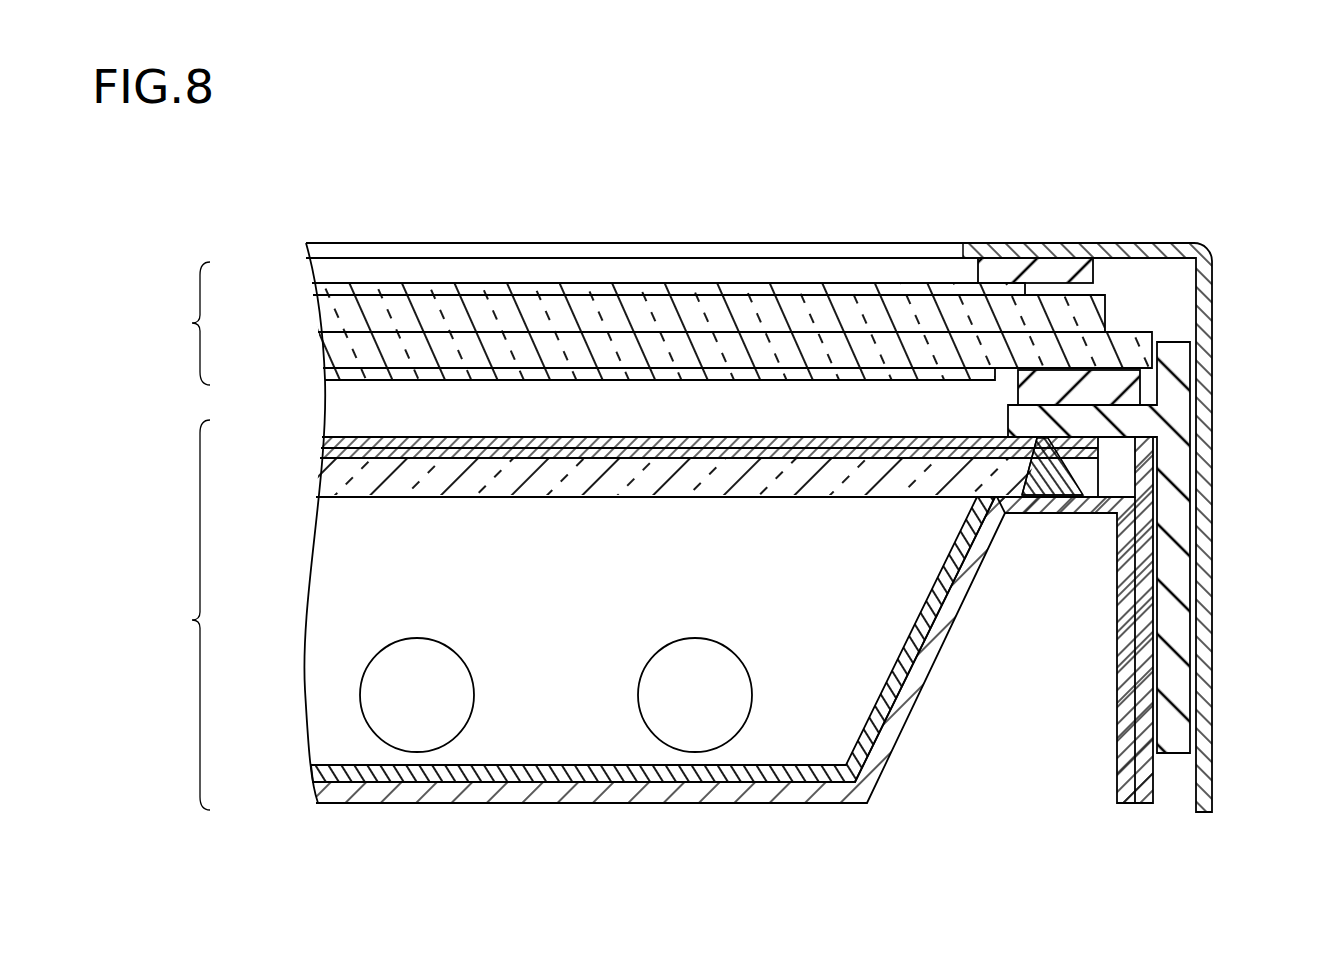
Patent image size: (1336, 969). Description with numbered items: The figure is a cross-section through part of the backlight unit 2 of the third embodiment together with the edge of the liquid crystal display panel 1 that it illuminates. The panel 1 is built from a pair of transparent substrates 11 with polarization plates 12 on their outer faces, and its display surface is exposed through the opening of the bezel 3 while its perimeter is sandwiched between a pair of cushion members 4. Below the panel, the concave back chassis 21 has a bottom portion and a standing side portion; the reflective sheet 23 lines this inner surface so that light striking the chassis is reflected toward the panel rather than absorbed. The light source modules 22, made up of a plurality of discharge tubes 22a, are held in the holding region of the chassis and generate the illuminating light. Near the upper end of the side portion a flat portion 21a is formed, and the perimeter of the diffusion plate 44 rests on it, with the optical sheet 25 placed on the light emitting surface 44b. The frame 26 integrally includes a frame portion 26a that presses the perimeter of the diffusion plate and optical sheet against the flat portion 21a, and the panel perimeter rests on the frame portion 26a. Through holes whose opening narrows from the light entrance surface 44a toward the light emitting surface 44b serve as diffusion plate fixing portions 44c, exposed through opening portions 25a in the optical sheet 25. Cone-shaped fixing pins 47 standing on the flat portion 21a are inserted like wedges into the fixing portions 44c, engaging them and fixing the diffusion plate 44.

The liquid crystal display panel 1 is at (663, 323).
The backlight unit 2 is at (192, 615).
The bezel 3 is at (1200, 250).
The cushion member 4 is at (1022, 268).
The transparent substrate 11 is at (325, 313).
The polarization plate 12 is at (322, 289).
The back chassis 21 is at (330, 793).
The flat portion 21a is at (1090, 507).
The light source module 22 is at (343, 682).
The discharge tube 22a is at (417, 663).
The reflective sheet 23 is at (328, 773).
The optical sheet 25 is at (322, 443).
The opening portion 25a is at (1043, 438).
The frame 26 is at (1175, 410).
The frame portion 26a is at (1103, 428).
The diffusion plate 44 is at (322, 479).
The light entrance surface 44a is at (498, 497).
The light emitting surface 44b is at (634, 458).
The diffusion plate fixing portion 44c is at (1062, 467).
The fixing pin 47 is at (1040, 480).